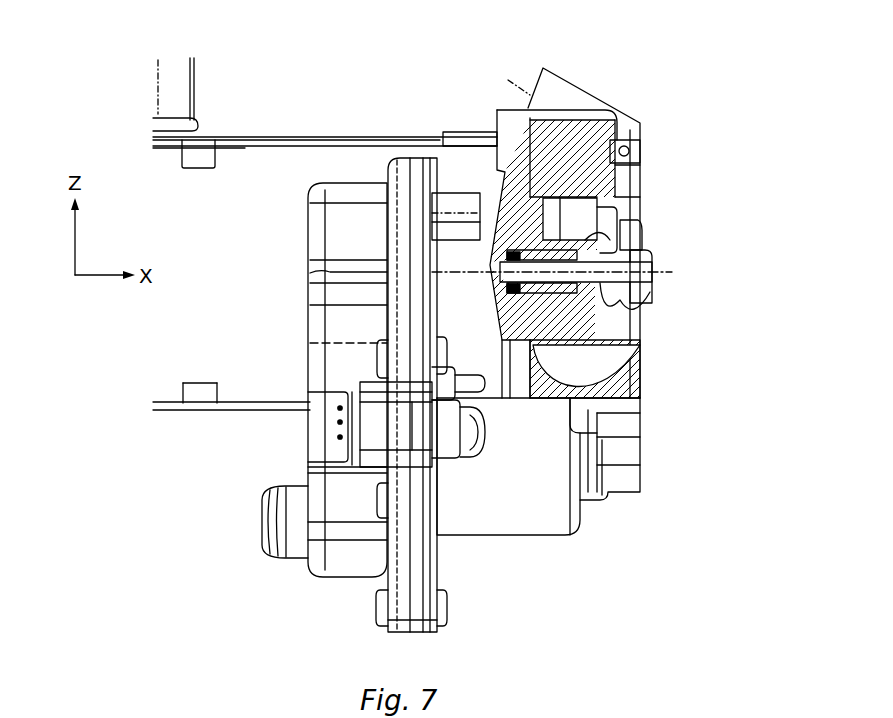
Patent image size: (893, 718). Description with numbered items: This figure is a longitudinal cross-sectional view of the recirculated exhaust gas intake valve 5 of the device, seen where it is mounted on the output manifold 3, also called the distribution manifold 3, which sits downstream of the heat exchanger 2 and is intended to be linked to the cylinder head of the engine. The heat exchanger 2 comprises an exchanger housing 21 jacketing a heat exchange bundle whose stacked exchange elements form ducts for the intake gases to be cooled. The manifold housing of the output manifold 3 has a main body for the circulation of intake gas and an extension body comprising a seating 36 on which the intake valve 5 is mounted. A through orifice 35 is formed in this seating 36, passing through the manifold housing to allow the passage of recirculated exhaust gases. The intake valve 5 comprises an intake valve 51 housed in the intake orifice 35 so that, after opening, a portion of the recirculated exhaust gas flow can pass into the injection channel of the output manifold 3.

The heat exchanger 2 is at (309, 126).
The exchanger housing 21 is at (247, 137).
The output manifold 3 is at (572, 309).
The intake valve 5 is at (240, 512).
The intake orifice 35 is at (630, 185).
The seating 36 is at (614, 150).
The intake valve 51 is at (657, 278).